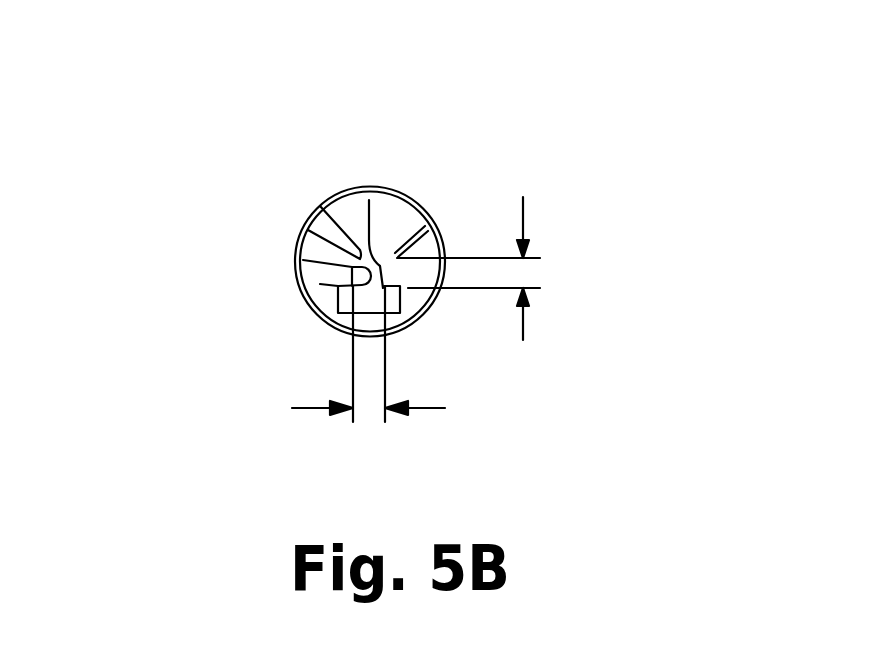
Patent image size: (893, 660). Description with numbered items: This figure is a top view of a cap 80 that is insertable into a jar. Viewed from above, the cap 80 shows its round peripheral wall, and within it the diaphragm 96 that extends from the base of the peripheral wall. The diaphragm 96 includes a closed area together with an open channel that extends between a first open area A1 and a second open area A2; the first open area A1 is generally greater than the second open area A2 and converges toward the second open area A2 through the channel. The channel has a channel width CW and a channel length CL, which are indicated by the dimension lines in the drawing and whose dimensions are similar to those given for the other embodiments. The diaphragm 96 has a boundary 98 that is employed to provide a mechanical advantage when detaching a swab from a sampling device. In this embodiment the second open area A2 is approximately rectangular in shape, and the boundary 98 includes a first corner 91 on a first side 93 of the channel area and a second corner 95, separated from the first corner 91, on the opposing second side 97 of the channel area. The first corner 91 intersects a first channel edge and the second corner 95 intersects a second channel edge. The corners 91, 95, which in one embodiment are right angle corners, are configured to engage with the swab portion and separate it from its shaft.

The cap 80 is at (512, 81).
The first side of the channel area 93 is at (330, 215).
The second side of the channel area 97 is at (440, 237).
The boundary 98 is at (369, 205).
The first corner 91 is at (303, 260).
The diaphragm 96 is at (320, 284).
The second corner 95 is at (383, 290).
The first open area A1 is at (392, 223).
The second open area A2 is at (403, 327).
The channel length CL is at (523, 197).
The channel width CW is at (294, 408).